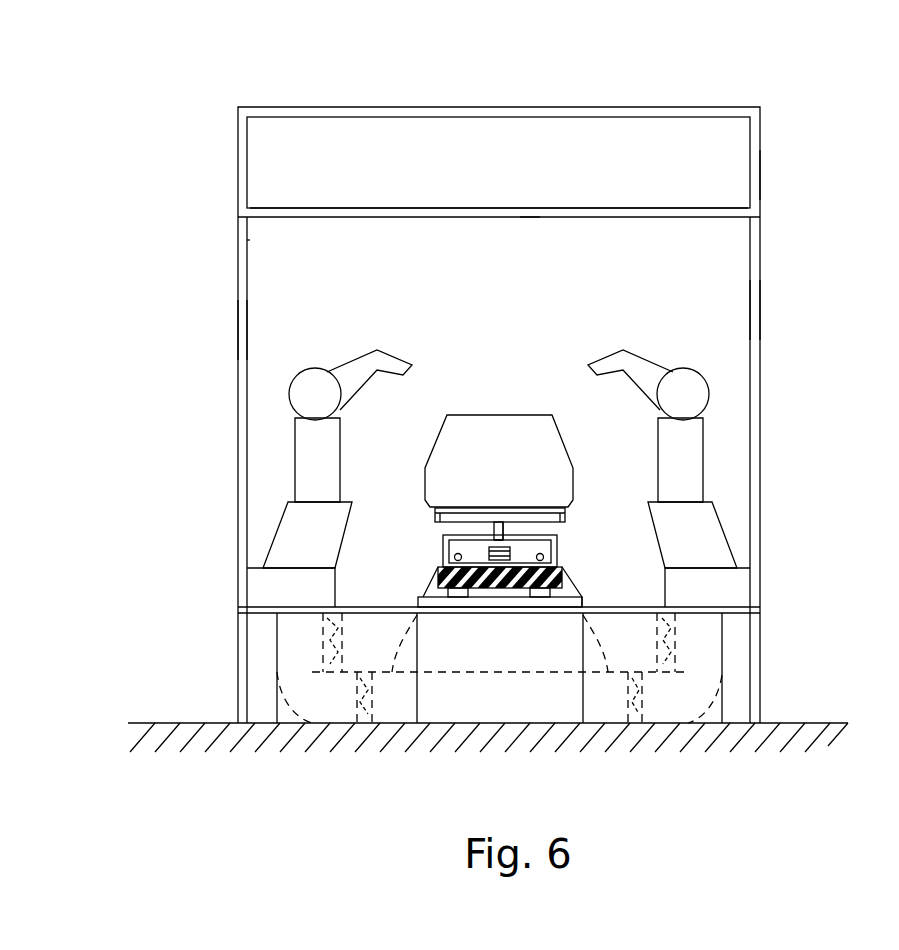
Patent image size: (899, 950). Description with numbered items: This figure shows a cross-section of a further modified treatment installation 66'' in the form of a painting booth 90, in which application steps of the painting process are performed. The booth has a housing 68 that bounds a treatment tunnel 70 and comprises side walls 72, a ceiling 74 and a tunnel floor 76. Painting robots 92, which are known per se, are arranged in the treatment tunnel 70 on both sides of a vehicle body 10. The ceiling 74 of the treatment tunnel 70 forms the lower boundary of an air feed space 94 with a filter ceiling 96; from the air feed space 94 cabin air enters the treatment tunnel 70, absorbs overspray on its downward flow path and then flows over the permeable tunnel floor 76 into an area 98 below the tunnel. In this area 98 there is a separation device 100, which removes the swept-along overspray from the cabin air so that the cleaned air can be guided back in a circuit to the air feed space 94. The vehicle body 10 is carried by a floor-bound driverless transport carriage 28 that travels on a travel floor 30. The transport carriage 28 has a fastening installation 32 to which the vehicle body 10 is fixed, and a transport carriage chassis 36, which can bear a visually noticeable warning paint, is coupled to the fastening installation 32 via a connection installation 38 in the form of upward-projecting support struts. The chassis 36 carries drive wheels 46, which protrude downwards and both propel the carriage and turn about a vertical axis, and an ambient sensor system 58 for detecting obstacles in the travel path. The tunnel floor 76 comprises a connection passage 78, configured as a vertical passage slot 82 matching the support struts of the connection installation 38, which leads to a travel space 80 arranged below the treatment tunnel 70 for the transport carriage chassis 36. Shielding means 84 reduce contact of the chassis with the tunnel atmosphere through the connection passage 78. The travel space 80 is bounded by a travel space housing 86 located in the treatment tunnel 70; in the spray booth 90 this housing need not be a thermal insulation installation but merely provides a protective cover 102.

The treatment installation 66'' is at (499, 376).
The housing 68 is at (388, 103).
The treatment tunnel 70 is at (467, 240).
The ceiling 74 is at (530, 212).
The air feed space 94 is at (620, 138).
The filter ceiling 96 is at (694, 206).
The painting booth 90 is at (765, 178).
The side walls 72 is at (238, 333).
The painting robots 92 is at (312, 473).
The vehicle body 10 is at (517, 427).
The fastening installation 32 is at (548, 506).
The shielding means 84 is at (488, 528).
The connection installation 38 is at (511, 522).
The vertical passage slot 82 is at (498, 540).
The connection passage 78 is at (512, 547).
The transport carriage 28 is at (557, 560).
The protective cover 102 is at (440, 538).
The travel space housing 86 is at (440, 563).
The transport carriage chassis 36 is at (560, 567).
The ambient sensor system 58 is at (478, 592).
The drive wheels 46 is at (455, 598).
The travel floor 30 is at (505, 597).
The travel space 80 is at (564, 600).
The tunnel floor 76 is at (638, 615).
The area below the treatment tunnel 98 is at (303, 672).
The separation device 100 is at (333, 698).